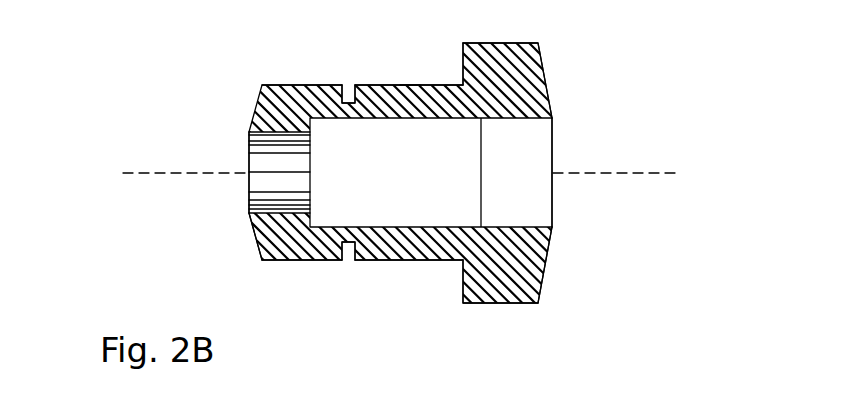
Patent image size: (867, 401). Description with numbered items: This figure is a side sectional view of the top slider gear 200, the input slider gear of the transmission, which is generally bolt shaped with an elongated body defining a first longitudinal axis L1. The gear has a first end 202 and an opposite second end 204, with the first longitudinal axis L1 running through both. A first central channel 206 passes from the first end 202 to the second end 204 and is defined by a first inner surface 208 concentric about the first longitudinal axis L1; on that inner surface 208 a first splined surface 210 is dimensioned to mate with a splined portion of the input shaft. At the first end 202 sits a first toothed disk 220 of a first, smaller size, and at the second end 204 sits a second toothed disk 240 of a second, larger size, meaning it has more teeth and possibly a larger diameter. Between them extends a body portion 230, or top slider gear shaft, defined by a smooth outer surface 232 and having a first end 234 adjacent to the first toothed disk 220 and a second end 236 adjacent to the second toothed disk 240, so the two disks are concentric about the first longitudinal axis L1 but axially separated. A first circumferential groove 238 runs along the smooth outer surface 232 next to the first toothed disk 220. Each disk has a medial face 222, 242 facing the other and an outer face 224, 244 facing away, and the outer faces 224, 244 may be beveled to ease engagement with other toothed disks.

The top slider gear 200 is at (135, 76).
The first end 202 is at (236, 68).
The second end 204 is at (592, 68).
The first central channel 206 is at (222, 165).
The first inner surface 208 is at (256, 198).
The first splined surface 210 is at (262, 148).
The first toothed disk 220 is at (306, 262).
The medial face 222 is at (345, 90).
The outer face 224 is at (252, 246).
The body portion 230 is at (372, 95).
The smooth outer surface 232 is at (400, 85).
The first end of the body portion 234 is at (362, 270).
The second end of the body portion 236 is at (450, 286).
The first circumferential groove 238 is at (344, 266).
The second toothed disk 240 is at (498, 42).
The medial face 242 is at (462, 60).
The outer face 244 is at (552, 270).
The first longitudinal axis L1 is at (645, 172).